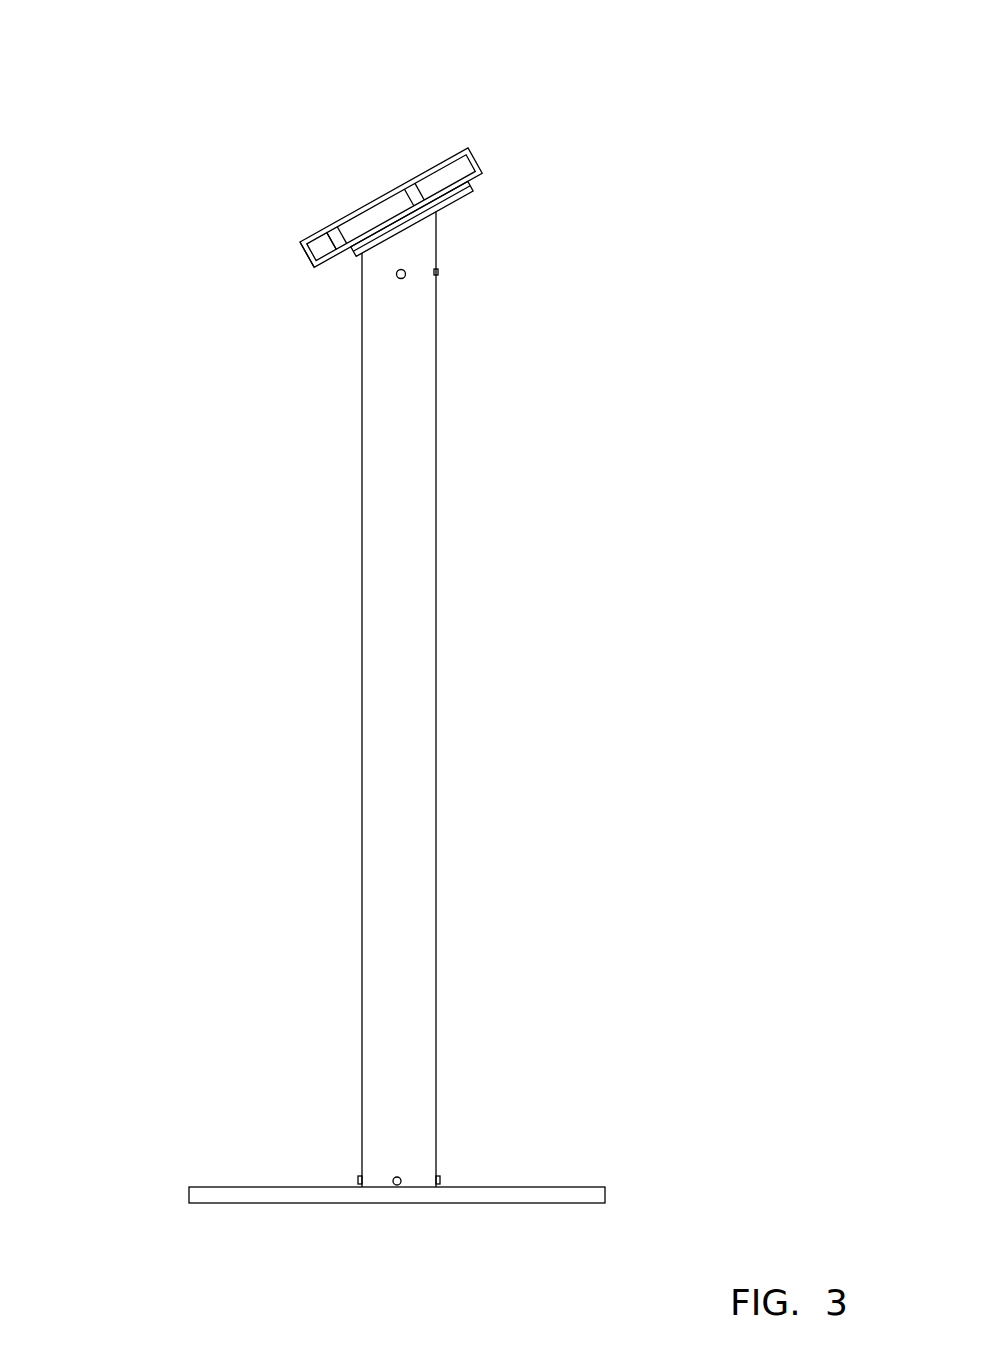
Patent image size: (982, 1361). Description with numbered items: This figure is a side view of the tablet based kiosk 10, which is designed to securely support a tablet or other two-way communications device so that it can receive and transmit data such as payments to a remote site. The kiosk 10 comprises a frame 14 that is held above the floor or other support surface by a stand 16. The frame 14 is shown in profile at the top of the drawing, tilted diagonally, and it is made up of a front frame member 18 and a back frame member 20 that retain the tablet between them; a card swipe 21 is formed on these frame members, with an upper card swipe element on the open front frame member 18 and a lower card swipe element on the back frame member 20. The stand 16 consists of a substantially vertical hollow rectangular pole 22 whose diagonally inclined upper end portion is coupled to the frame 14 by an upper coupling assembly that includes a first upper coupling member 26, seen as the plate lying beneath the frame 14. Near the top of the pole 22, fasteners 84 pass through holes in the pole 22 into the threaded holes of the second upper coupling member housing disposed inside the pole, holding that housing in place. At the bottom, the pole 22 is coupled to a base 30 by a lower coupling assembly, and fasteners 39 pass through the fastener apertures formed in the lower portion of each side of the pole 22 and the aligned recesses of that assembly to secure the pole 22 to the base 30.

The tablet based kiosk 10 is at (180, 682).
The frame 14 is at (398, 166).
The stand 16 is at (492, 699).
The front frame member 18 is at (300, 232).
The back frame member 20 is at (320, 273).
The card swipe 21 is at (313, 250).
The substantially vertical hollow rectangular pole 22 is at (434, 540).
The first upper coupling member 26 is at (471, 193).
The base 30 is at (582, 1140).
The fastener 39 is at (356, 1178).
The fasteners 84 is at (438, 272).